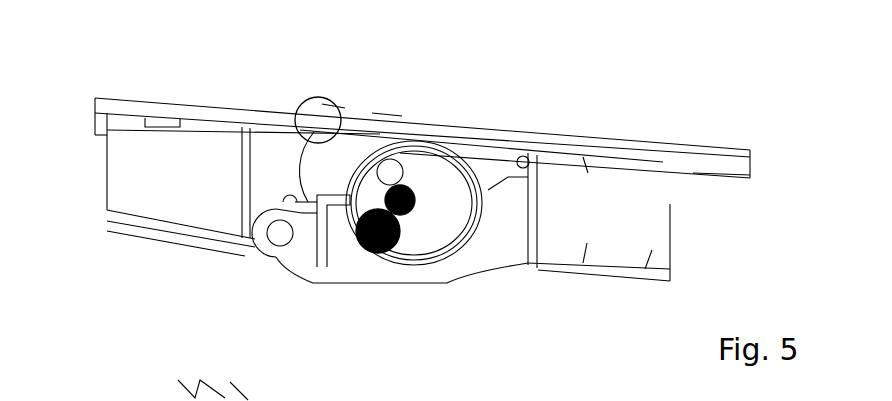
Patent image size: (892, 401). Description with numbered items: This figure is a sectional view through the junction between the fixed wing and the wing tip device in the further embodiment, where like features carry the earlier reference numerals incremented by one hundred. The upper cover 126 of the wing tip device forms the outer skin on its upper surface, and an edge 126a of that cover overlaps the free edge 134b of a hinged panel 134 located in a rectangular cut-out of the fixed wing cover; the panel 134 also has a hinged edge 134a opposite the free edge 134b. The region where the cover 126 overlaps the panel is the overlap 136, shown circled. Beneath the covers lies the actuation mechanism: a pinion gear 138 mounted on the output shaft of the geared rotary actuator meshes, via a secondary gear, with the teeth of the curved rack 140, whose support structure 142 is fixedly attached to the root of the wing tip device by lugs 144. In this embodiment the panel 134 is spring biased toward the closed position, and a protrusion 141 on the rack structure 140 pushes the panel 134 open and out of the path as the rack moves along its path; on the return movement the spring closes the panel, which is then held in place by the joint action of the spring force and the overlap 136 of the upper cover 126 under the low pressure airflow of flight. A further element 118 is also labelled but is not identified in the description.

The pin 118 is at (392, 172).
The upper cover 126 is at (422, 144).
The edge of the replaceable panel of the upper cover 126a is at (297, 120).
The hinged panel 134 is at (358, 104).
The hinged edge 134a is at (422, 97).
The free edge 134b is at (330, 96).
The overlap 136 is at (302, 104).
The pinion gear 138 is at (410, 212).
The curved rack 140 is at (487, 210).
The protrusion 141 is at (295, 202).
The support structure 142 is at (356, 270).
The lugs 144 is at (295, 247).